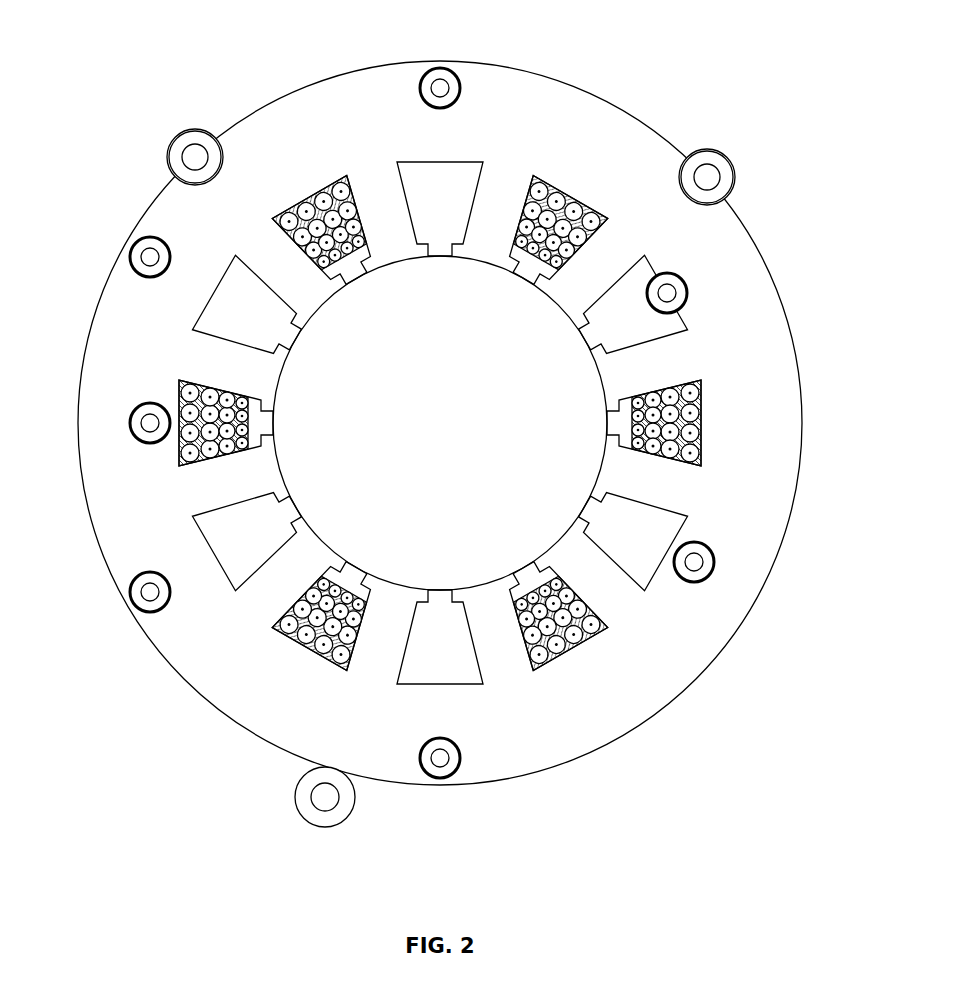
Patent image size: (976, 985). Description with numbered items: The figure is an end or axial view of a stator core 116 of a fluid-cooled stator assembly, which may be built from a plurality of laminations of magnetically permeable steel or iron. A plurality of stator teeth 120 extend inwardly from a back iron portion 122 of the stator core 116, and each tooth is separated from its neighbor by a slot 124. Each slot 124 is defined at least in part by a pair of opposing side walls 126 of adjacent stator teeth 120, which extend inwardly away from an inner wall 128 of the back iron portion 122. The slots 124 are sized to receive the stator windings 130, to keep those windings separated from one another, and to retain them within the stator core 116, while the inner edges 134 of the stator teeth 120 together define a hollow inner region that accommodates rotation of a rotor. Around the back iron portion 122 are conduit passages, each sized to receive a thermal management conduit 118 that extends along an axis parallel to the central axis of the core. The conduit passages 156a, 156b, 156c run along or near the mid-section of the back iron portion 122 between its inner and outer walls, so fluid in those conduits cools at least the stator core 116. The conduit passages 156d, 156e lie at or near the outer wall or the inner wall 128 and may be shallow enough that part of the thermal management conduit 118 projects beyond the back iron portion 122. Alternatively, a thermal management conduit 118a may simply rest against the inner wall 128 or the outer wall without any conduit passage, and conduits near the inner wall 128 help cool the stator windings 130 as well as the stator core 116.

The stator core 116 is at (648, 706).
The thermal management conduit 118 is at (433, 452).
The thermal management conduit 118a is at (327, 827).
The stator teeth 120 is at (316, 298).
The back iron portion 122 is at (295, 712).
The slot 124 is at (439, 423).
The side walls 126 is at (400, 648).
The inner wall 128 is at (437, 160).
The stator windings 130 is at (322, 178).
The inner edges 134 is at (493, 241).
The conduit passage 156a is at (132, 266).
The conduit passage 156b is at (132, 428).
The conduit passage 156c is at (460, 82).
The conduit passage 156d is at (222, 153).
The conduit passage 156e is at (688, 295).